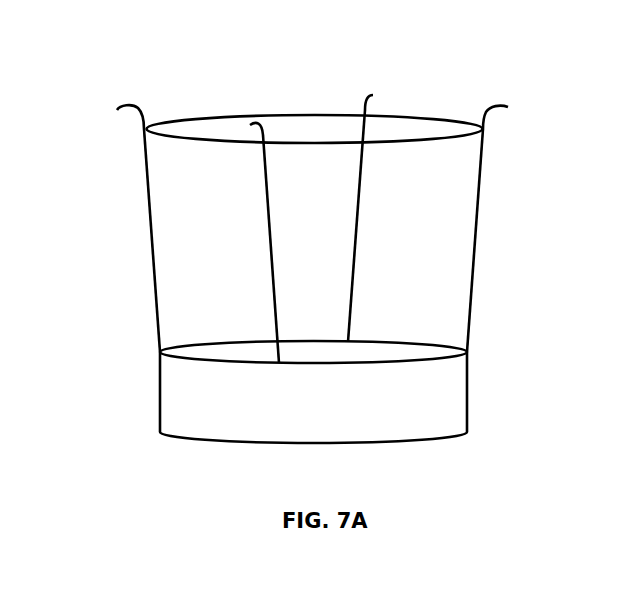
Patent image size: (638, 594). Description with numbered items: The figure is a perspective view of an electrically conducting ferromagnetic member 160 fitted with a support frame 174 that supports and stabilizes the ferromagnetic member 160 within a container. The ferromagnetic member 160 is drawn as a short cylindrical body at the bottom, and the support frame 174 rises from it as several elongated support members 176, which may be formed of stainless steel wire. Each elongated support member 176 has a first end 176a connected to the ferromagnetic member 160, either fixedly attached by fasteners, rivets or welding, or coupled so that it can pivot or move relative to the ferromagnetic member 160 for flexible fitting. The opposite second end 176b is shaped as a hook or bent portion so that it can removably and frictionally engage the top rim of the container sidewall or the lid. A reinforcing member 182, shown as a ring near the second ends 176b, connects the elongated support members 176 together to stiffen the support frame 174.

The support frame 174 is at (387, 53).
The reinforcing member 182 is at (213, 117).
The elongated support member 176 is at (267, 203).
The second end 176b is at (135, 107).
The first end 176a is at (158, 343).
The ferromagnetic member 160 is at (437, 398).